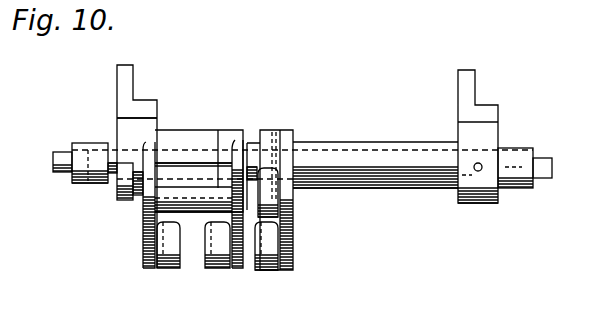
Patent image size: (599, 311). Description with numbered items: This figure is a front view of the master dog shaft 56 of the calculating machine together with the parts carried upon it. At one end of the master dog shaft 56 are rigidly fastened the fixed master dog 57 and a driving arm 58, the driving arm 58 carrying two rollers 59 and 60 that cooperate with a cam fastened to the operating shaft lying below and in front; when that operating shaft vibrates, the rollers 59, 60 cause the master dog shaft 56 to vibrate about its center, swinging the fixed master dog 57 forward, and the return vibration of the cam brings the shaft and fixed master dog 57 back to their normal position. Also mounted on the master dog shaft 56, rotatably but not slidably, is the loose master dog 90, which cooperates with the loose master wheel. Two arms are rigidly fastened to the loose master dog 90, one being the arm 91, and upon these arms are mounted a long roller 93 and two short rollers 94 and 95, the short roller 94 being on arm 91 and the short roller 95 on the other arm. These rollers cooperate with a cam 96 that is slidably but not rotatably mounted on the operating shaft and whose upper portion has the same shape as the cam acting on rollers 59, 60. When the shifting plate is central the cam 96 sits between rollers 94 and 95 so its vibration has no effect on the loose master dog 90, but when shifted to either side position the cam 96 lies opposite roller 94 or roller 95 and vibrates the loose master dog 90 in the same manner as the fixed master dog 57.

The master dog shaft 56 is at (400, 152).
The fixed master dog 57 is at (485, 140).
The driving arm 58 is at (281, 140).
The roller 59 is at (280, 212).
The roller 60 is at (270, 242).
The loose master dog 90 is at (127, 85).
The arm 91 is at (143, 226).
The long roller 93 is at (193, 182).
The short roller 94 is at (163, 268).
The short roller 95 is at (222, 265).
The cam 96 is at (245, 258).